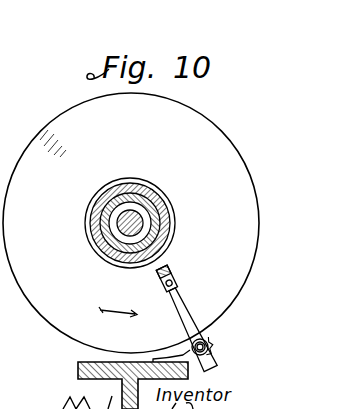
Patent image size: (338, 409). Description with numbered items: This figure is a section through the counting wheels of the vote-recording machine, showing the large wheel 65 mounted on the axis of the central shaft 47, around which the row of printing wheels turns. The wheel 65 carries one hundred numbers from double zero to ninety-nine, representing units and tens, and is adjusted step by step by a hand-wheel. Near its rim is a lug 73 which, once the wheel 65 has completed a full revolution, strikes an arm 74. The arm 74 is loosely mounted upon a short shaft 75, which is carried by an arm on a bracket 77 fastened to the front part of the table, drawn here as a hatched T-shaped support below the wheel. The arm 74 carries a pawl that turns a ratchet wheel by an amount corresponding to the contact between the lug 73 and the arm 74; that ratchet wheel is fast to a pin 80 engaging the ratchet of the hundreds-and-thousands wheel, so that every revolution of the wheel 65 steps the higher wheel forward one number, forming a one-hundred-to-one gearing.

The wheel 65 is at (131, 223).
The central shaft 47 is at (143, 221).
The lug 73 is at (178, 291).
The arm 74 is at (187, 321).
The short shaft 75 is at (212, 346).
The pin 80 is at (211, 352).
The bracket 77 is at (78, 366).